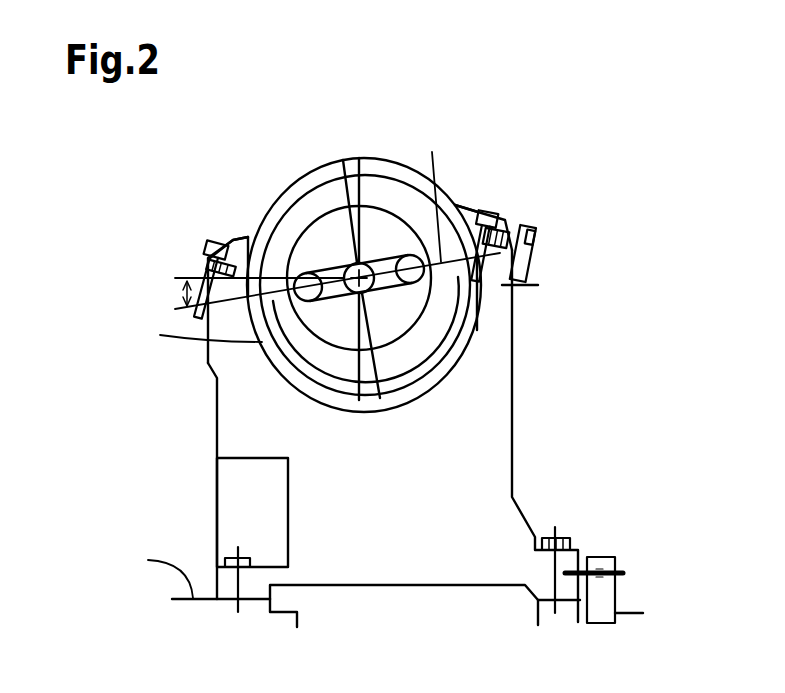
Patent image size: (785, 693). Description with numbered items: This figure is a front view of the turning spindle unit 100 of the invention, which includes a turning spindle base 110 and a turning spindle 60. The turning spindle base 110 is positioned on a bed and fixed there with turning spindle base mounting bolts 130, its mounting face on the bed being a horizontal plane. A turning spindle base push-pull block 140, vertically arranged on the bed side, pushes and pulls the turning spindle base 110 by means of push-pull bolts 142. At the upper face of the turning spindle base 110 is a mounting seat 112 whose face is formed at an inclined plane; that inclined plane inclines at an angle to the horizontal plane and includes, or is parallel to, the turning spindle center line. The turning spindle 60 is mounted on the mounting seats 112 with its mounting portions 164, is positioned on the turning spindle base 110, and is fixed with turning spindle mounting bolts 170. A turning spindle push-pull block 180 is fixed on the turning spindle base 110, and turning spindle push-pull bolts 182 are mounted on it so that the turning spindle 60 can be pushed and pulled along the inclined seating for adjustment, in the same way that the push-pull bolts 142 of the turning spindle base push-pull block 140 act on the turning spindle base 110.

The turning spindle 60 is at (313, 192).
The turning spindle unit 100 is at (685, 228).
The turning spindle base 110 is at (290, 430).
The mounting seat 112 is at (208, 268).
The turning spindle base mounting bolt 130 is at (233, 557).
The turning spindle base push-pull block 140 is at (608, 592).
The push-pull bolt 142 is at (602, 567).
The mounting portion 164 is at (245, 237).
The turning spindle mounting bolt 170 is at (209, 250).
The turning spindle push-pull block 180 is at (532, 270).
The turning spindle push-pull bolt 182 is at (529, 232).